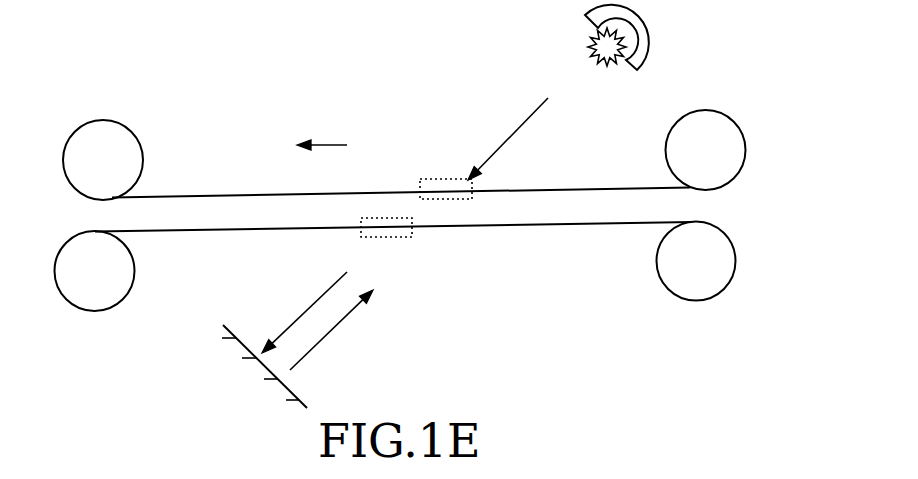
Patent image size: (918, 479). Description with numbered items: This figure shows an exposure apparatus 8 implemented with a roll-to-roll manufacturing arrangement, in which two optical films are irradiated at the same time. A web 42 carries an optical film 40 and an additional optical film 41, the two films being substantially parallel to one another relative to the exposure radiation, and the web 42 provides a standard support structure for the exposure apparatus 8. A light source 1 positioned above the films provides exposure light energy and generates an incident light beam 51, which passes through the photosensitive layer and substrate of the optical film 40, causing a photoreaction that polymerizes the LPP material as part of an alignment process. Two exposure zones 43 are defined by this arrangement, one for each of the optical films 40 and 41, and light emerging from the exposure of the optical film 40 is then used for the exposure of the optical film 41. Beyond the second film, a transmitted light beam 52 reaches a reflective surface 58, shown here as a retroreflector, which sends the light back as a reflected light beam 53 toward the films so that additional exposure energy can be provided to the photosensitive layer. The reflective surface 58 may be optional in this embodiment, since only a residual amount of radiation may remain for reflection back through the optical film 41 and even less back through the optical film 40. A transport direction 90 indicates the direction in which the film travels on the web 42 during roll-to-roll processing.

The light source 1 is at (660, 52).
The exposure apparatus 8 is at (673, 393).
The optical film 40 is at (629, 187).
The optical film 41 is at (620, 226).
The web 42 is at (730, 179).
The exposure zones 43 is at (490, 185).
The incident light beam 51 is at (557, 97).
The transmitted light beam 52 is at (348, 270).
The reflected light beam 53 is at (375, 299).
The reflective surface 58 is at (308, 407).
The transport direction 90 is at (313, 128).